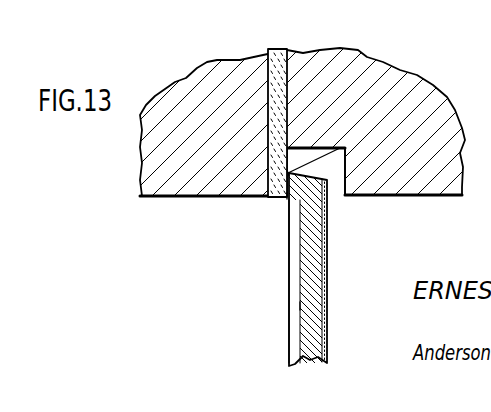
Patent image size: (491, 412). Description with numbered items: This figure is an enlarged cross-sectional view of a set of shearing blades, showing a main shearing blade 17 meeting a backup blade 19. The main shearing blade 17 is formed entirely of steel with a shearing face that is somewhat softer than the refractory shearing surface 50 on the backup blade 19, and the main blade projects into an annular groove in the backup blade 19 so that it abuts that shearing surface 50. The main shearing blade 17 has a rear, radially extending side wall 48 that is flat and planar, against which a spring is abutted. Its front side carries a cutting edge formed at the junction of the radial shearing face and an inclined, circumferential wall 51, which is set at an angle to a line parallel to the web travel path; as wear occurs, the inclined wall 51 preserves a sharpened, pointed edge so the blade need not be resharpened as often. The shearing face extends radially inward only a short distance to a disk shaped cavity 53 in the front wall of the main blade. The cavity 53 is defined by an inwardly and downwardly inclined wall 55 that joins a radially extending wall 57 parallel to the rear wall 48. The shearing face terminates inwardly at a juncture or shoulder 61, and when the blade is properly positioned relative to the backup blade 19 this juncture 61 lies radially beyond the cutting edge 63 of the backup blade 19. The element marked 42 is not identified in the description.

The backup blade 19 is at (203, 57).
The post 42 is at (272, 98).
The shearing surface 50 is at (293, 148).
The inclined circumferential wall 51 is at (344, 146).
The juncture or shoulder 61 is at (288, 173).
The cutting edge of backing blade 63 is at (287, 198).
The inwardly and downwardly inclined wall 55 is at (300, 186).
The disk shaped cavity 53 is at (298, 265).
The radially extending wall 57 is at (300, 305).
The rear radially extending side wall 48 is at (328, 260).
The main shearing blade 17 is at (337, 292).